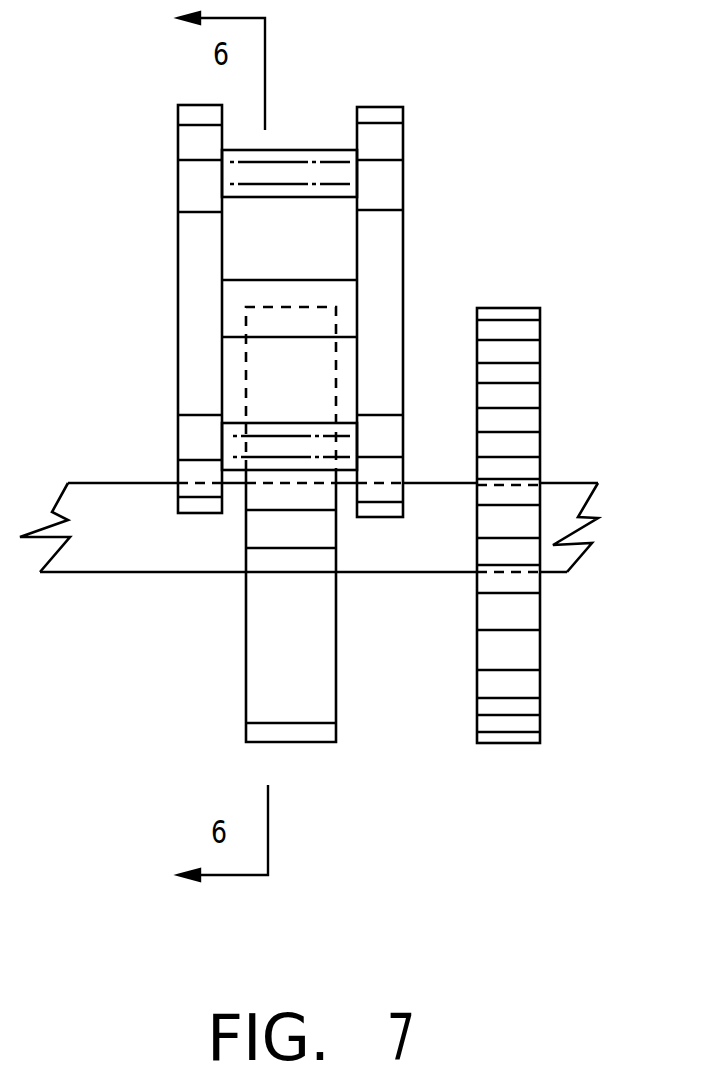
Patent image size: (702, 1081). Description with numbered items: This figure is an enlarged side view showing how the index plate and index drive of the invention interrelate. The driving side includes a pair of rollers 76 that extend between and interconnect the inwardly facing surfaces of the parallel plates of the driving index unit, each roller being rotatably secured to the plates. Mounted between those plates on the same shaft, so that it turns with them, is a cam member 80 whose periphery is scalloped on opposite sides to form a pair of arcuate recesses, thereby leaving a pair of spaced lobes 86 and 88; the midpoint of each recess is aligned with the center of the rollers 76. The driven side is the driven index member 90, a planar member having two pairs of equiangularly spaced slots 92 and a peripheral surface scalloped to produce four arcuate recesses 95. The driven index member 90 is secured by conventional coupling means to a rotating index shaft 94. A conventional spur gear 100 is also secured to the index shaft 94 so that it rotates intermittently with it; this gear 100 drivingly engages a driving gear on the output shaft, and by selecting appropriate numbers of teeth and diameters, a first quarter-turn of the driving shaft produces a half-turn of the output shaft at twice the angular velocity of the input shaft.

The rollers 76 is at (233, 293).
The cam member 80 is at (300, 241).
The lobe 86 is at (227, 443).
The lobe 88 is at (227, 182).
The driven index member 90 is at (207, 607).
The slots 92 is at (322, 535).
The index shaft 94 is at (110, 549).
The arcuate recesses 95 is at (318, 681).
The spur gear 100 is at (508, 330).